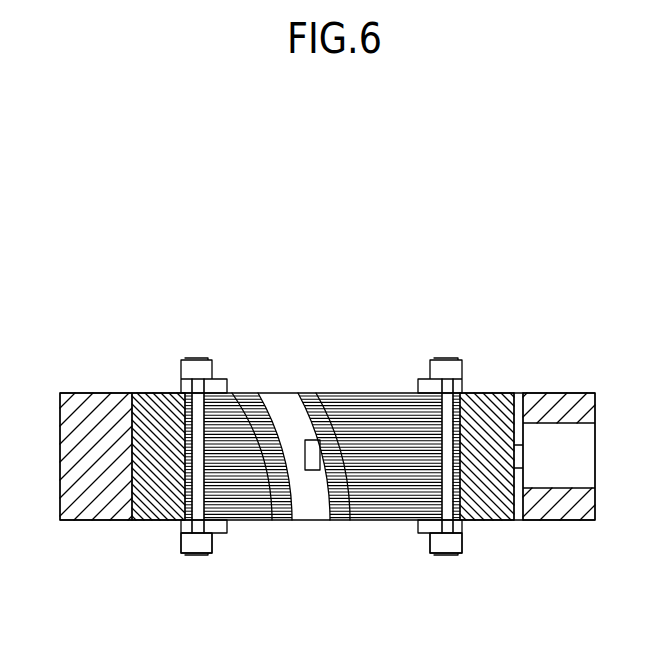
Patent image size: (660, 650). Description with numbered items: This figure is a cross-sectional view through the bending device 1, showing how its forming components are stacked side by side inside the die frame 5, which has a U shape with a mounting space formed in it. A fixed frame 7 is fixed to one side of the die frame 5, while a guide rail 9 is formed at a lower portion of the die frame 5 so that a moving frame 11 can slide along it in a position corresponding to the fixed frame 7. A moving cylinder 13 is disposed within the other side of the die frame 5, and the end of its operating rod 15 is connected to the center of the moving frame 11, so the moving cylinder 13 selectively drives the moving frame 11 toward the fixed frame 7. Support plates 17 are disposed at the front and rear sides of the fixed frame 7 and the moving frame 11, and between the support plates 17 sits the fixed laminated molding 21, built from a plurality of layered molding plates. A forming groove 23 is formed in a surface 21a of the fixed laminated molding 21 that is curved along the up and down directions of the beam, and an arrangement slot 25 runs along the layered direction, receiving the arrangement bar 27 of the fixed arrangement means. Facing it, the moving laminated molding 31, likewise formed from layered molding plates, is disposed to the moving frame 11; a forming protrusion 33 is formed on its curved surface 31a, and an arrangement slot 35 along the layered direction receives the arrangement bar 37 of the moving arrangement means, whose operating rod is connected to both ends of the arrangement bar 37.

The bending device 1 is at (62, 373).
The die frame 5 is at (75, 497).
The fixed frame 7 is at (166, 397).
The guide rail 9 is at (312, 452).
The moving frame 11 is at (486, 513).
The moving cylinder 13 is at (590, 464).
The operating rod 15 is at (517, 455).
The support plates 17 is at (222, 384).
The fixed laminated molding 21 is at (264, 513).
The surface of the fixed laminated molding 21a is at (292, 491).
The forming groove 23 is at (282, 519).
The arrangement slot 25 is at (200, 472).
The arrangement bar 27 is at (197, 556).
The moving laminated molding 31 is at (366, 460).
The surface of the moving laminated molding 31a is at (297, 406).
The forming protrusion 33 is at (339, 519).
The arrangement slot 35 is at (454, 472).
The arrangement bar 37 is at (447, 556).